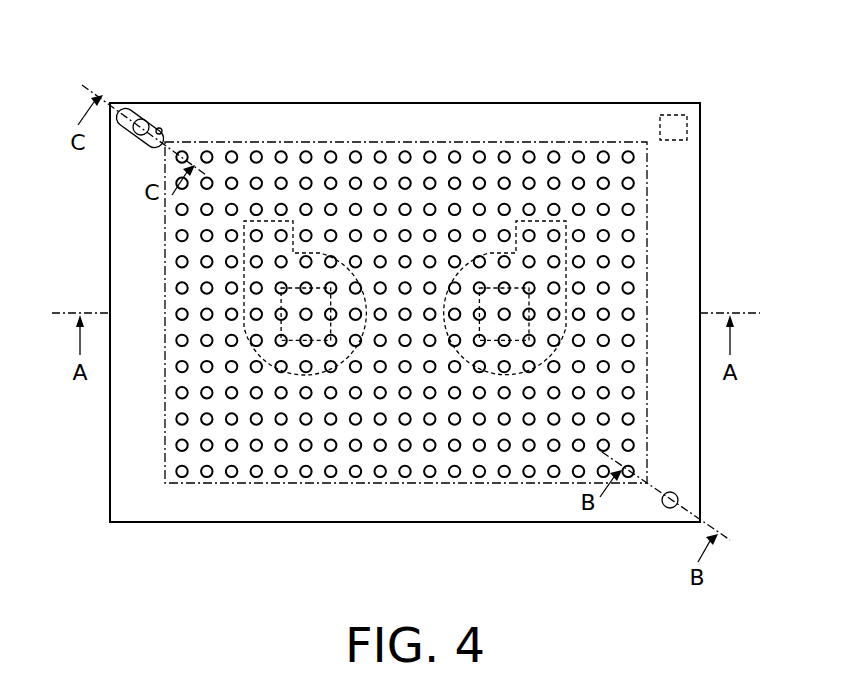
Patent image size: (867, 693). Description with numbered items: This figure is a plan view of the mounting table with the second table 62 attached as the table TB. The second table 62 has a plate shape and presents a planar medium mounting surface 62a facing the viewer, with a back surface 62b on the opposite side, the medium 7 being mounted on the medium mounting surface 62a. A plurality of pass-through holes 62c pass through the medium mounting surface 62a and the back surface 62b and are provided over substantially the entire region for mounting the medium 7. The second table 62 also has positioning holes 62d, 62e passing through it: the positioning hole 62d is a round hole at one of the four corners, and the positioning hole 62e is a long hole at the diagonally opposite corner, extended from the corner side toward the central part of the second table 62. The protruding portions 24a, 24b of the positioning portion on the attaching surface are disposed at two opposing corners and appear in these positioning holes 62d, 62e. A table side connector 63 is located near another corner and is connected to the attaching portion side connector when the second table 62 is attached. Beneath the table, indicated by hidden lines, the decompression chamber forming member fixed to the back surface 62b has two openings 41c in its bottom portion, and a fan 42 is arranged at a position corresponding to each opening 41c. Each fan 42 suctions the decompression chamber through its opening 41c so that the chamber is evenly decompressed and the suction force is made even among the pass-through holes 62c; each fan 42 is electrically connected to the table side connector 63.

The second table 62 is at (700, 139).
The table TB is at (455, 312).
The medium mounting surface 62a is at (690, 203).
The back surface 62b is at (122, 468).
The pass-through holes 62c is at (231, 476).
The positioning hole 62d is at (678, 496).
The positioning hole 62e is at (160, 128).
The medium 7 is at (428, 484).
The opening 41c is at (321, 253).
The fan 42 is at (317, 374).
The table side connector 63 is at (675, 128).
The protruding portion 24a is at (706, 518).
The protruding portion 24b is at (141, 119).